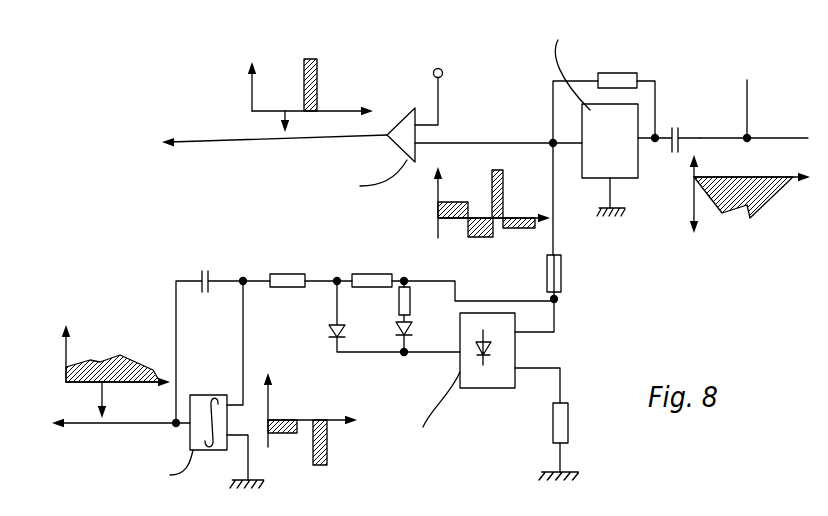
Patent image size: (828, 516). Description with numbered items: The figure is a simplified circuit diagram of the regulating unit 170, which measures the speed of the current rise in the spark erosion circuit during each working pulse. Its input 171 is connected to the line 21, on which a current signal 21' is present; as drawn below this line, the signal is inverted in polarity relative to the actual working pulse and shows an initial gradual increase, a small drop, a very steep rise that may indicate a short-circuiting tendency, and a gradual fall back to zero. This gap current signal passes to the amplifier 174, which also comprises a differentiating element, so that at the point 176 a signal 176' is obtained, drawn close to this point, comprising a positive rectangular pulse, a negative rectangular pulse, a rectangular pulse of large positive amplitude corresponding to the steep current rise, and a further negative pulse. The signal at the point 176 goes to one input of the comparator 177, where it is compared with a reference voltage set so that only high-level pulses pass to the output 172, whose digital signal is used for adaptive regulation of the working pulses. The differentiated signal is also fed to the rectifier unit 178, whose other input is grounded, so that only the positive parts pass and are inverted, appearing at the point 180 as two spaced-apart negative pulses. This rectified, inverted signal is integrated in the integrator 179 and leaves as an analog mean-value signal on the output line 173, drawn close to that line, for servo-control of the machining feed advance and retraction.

The regulating unit 170 is at (183, 225).
The input 171 is at (683, 133).
The output 172 is at (274, 99).
The second output 173 is at (117, 372).
The amplifier 174 is at (627, 172).
The point 176 is at (498, 187).
The signal 176' is at (463, 205).
The comparator 177 is at (402, 148).
The rectifier unit 178 is at (488, 387).
The integrator 179 is at (208, 395).
The point 180 is at (290, 387).
The line 21 is at (754, 125).
The current signal 21' is at (736, 206).